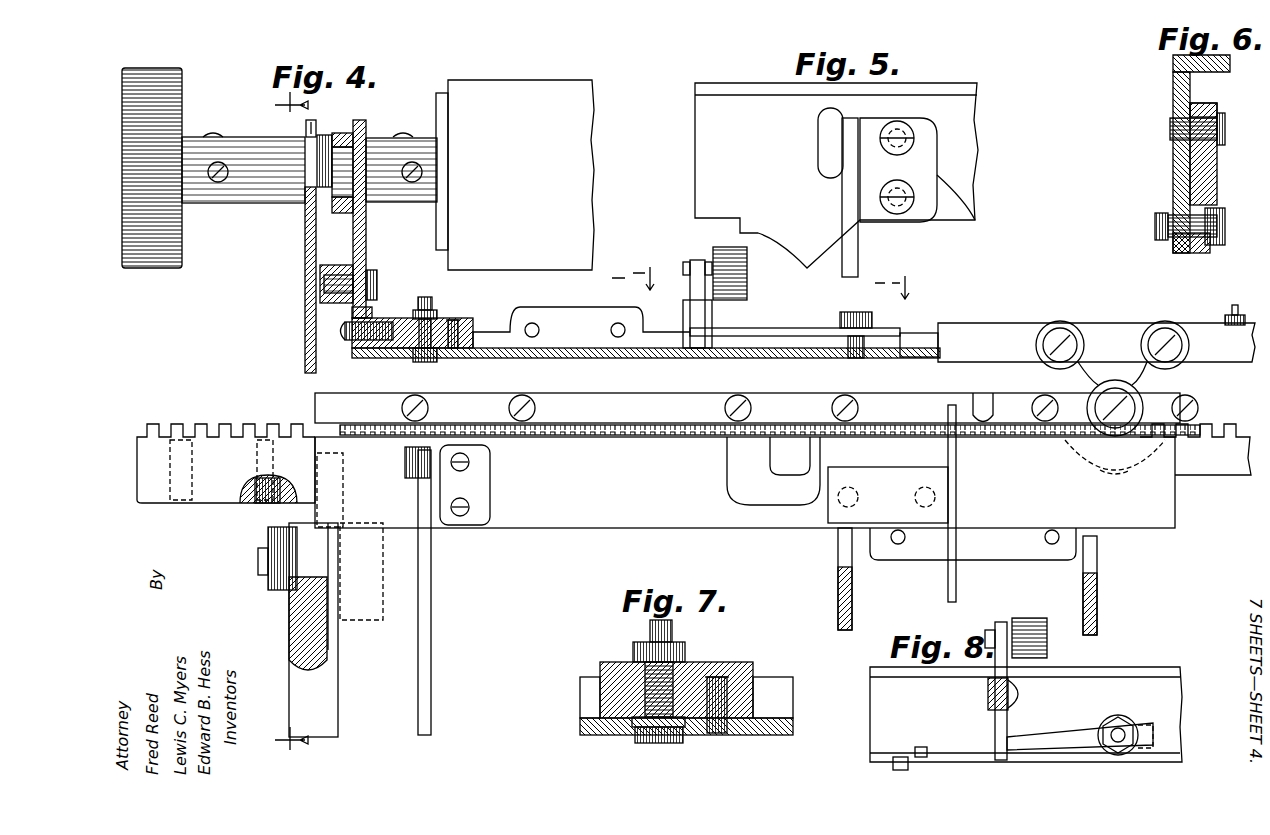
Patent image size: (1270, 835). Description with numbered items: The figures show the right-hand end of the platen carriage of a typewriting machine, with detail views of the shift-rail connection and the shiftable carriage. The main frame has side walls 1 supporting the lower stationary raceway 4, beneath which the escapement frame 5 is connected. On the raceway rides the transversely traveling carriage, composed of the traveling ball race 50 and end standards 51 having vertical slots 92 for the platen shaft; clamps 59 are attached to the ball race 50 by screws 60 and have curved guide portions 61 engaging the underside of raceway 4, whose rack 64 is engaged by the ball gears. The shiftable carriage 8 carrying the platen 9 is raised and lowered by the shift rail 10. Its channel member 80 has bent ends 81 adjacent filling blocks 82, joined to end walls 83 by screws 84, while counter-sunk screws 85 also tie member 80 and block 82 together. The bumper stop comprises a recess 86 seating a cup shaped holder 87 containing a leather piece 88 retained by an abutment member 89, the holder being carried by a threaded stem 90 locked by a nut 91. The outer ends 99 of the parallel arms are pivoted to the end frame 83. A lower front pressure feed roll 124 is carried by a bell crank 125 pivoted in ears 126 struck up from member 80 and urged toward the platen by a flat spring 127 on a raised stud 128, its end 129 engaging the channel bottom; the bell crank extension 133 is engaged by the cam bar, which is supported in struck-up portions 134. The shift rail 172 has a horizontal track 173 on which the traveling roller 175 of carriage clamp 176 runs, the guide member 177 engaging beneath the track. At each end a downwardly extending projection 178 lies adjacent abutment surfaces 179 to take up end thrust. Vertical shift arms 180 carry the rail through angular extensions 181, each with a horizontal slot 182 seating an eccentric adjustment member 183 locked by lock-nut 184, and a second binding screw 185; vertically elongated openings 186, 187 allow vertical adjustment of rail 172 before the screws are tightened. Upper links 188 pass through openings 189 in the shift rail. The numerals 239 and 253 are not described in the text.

In FIG. 4, the side walls 1 is at (325, 715).
In FIG. 4, the lower stationary raceway 4 is at (160, 430).
In FIG. 4, the escapement frame 5 is at (838, 600).
In FIG. 4, the shiftable carriage 8 is at (765, 281).
In FIG. 4, the platen 9 is at (523, 90).
In FIG. 4, the shift rail 10 is at (291, 422).
In FIG. 4, the traveling ball race 50 is at (618, 406).
In FIG. 4, the end standards 51 is at (305, 284).
In FIG. 4, the clamps 59 is at (480, 410).
In FIG. 4, the screws 60 is at (530, 398).
In FIG. 4, the guide portions 61 is at (790, 478).
In FIG. 4, the rack 64 is at (229, 422).
In FIG. 4, the channel member 80 is at (653, 340).
In FIG. 7, the channel member 80 is at (760, 735).
In FIG. 8, the channel member 80 is at (1070, 682).
In FIG. 4, the bent ends 81 is at (373, 310).
In FIG. 4, the filling blocks 82 is at (470, 320).
In FIG. 7, the filling blocks 82 is at (697, 667).
In FIG. 4, the end walls 83 is at (366, 232).
In FIG. 4, the screws 84 is at (348, 340).
In FIG. 4, the counter-sunk screws 85 is at (452, 350).
In FIG. 7, the counter-sunk screws 85 is at (728, 680).
In FIG. 7, the recess 86 is at (635, 712).
In FIG. 7, the cup shaped holder 87 is at (633, 727).
In FIG. 7, the leather piece 88 is at (665, 745).
In FIG. 7, the abutment member 89 is at (645, 745).
In FIG. 4, the threaded stem 90 is at (433, 304).
In FIG. 7, the threaded stem 90 is at (645, 685).
In FIG. 4, the nut 91 is at (415, 312).
In FIG. 7, the nut 91 is at (645, 650).
In FIG. 4, the vertical slots 92 is at (308, 126).
In FIG. 4, the outer ends 99 is at (344, 265).
In FIG. 4, the lower front pressure feed roll 124 is at (748, 272).
In FIG. 8, the lower front pressure feed roll 124 is at (1030, 618).
In FIG. 8, the bell crank 125 is at (1003, 622).
In FIG. 4, the ears 126 is at (688, 312).
In FIG. 8, the ears 126 is at (990, 710).
In FIG. 4, the flat spring 127 is at (772, 328).
In FIG. 8, the flat spring 127 is at (1052, 738).
In FIG. 4, the raised stud 128 is at (865, 303).
In FIG. 8, the raised stud 128 is at (1120, 725).
In FIG. 4, the spring end 129 is at (905, 330).
In FIG. 8, the spring end 129 is at (1145, 735).
In FIG. 8, the extension 133 is at (1001, 760).
In FIG. 4, the struck-up portions 134 is at (1237, 315).
In FIG. 8, the struck-up portions 134 is at (899, 757).
In FIG. 4, the shift rail 172 is at (668, 528).
In FIG. 5, the shift rail 172 is at (705, 123).
In FIG. 6, the shift rail 172 is at (1173, 183).
In FIG. 4, the horizontal track 173 is at (650, 437).
In FIG. 5, the horizontal track 173 is at (980, 90).
In FIG. 6, the horizontal track 173 is at (1229, 62).
In FIG. 4, the traveling roller 175 is at (1143, 400).
In FIG. 4, the carriage clamp 176 is at (1100, 330).
In FIG. 4, the guide member 177 is at (1115, 457).
In FIG. 4, the downwardly extending projection 178 is at (356, 625).
In FIG. 5, the downwardly extending projection 178 is at (847, 272).
In FIG. 4, the abutment surfaces 179 is at (337, 605).
In FIG. 4, the vertical shift arms 180 is at (432, 622).
In FIG. 4, the angular extensions 181 is at (478, 490).
In FIG. 5, the angular extensions 181 is at (935, 168).
In FIG. 6, the angular extensions 181 is at (1218, 172).
In FIG. 4, the horizontal slot 182 is at (476, 520).
In FIG. 5, the horizontal slot 182 is at (940, 190).
In FIG. 4, the eccentric adjustment member 183 is at (460, 517).
In FIG. 5, the eccentric adjustment member 183 is at (905, 210).
In FIG. 6, the eccentric adjustment member 183 is at (1226, 216).
In FIG. 6, the lock-nut 184 is at (1156, 214).
In FIG. 4, the second binding screw 185 is at (468, 456).
In FIG. 5, the second binding screw 185 is at (910, 132).
In FIG. 6, the second binding screw 185 is at (1226, 128).
In FIG. 5, the vertically elongated opening 186 is at (892, 213).
In FIG. 6, the vertically elongated opening 186 is at (1198, 253).
In FIG. 5, the vertically elongated opening 187 is at (905, 126).
In FIG. 6, the vertically elongated opening 187 is at (1205, 105).
In FIG. 4, the upper links 188 is at (410, 478).
In FIG. 4, the openings 189 is at (407, 455).
In FIG. 5, the openings 189 is at (823, 135).
In FIG. 4, the rod 239 is at (948, 575).
In FIG. 4, the notch 253 is at (983, 405).